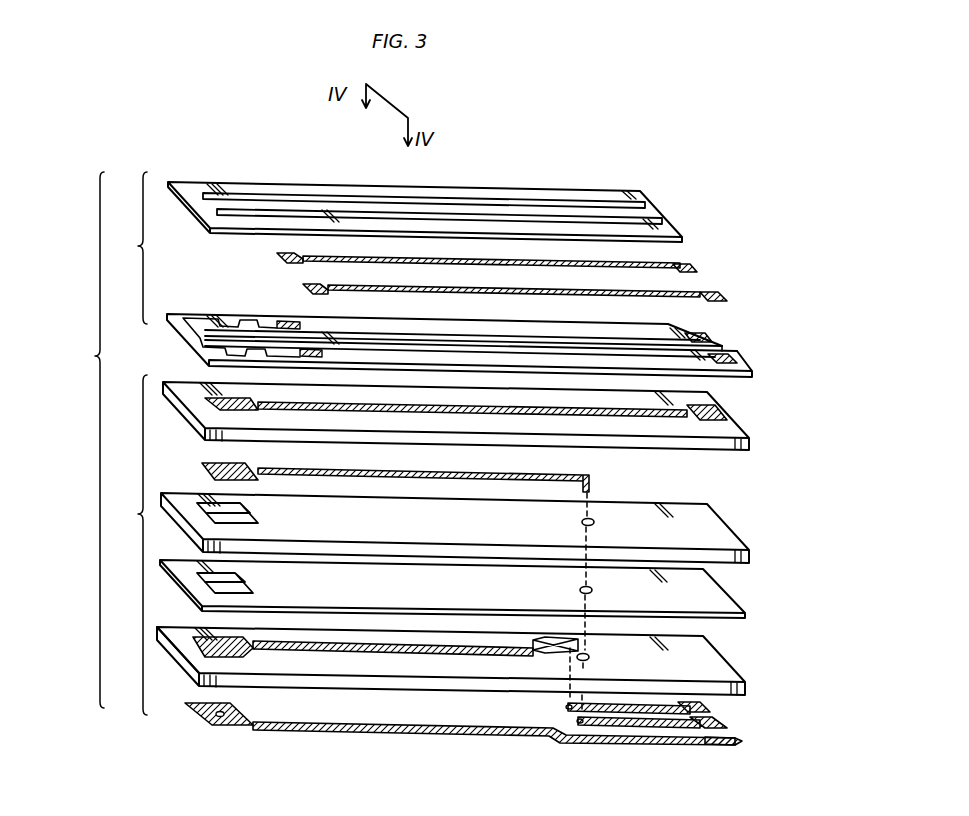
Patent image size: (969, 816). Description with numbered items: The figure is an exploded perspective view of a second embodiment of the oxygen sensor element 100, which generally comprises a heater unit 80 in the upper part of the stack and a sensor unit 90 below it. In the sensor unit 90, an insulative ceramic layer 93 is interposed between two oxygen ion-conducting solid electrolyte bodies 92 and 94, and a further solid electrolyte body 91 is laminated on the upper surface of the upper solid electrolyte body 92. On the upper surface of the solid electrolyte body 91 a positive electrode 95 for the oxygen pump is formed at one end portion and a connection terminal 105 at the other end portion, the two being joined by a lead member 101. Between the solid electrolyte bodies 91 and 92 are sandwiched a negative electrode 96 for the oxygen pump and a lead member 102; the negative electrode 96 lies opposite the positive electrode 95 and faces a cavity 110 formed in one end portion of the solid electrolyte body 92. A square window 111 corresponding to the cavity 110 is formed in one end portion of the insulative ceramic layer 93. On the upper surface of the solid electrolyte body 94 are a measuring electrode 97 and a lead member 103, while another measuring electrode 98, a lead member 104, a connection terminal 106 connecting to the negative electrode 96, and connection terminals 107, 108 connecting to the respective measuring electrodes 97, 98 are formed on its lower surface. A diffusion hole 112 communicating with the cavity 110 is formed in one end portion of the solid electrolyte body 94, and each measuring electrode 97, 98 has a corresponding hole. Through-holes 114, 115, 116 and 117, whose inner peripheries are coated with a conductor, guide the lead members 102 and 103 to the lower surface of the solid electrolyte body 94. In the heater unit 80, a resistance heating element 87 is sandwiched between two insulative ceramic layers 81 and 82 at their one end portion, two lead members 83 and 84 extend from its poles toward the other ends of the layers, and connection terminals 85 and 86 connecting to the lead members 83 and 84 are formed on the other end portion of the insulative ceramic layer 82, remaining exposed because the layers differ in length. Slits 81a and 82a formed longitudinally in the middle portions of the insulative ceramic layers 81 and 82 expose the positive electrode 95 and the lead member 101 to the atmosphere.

The oxygen sensor element 100 is at (93, 369).
The heater unit 80 is at (127, 248).
The sensor unit 90 is at (126, 545).
The insulative ceramic layer 81 is at (560, 188).
The slit 81a is at (484, 210).
The insulative ceramic layer 82 is at (180, 312).
The slit 82a is at (522, 346).
The lead member 83 is at (625, 262).
The lead member 84 is at (652, 293).
The connection terminal 85 is at (712, 340).
The connection terminal 86 is at (735, 357).
The resistance heating element 87 is at (200, 316).
The solid electrolyte body 91 is at (750, 444).
The solid electrolyte body 92 is at (735, 530).
The insulative ceramic layer 93 is at (742, 607).
The solid electrolyte body 94 is at (735, 660).
The positive electrode 95 is at (245, 412).
The negative electrode 96 is at (206, 468).
The measuring electrode 97 is at (198, 648).
The measuring electrode 98 is at (205, 712).
The lead member 101 is at (597, 413).
The lead member 102 is at (430, 475).
The lead member 103 is at (403, 650).
The lead member 104 is at (446, 740).
The connection terminal 105 is at (722, 414).
The connection terminal 106 is at (728, 723).
The connection terminal 107 is at (712, 708).
The connection terminal 108 is at (738, 742).
The cavity 110 is at (246, 512).
The square window 111 is at (246, 582).
The diffusion hole 112 is at (240, 652).
The through-hole 114 is at (594, 520).
The through-hole 115 is at (592, 589).
The through-hole 116 is at (590, 658).
The through-hole 117 is at (582, 645).